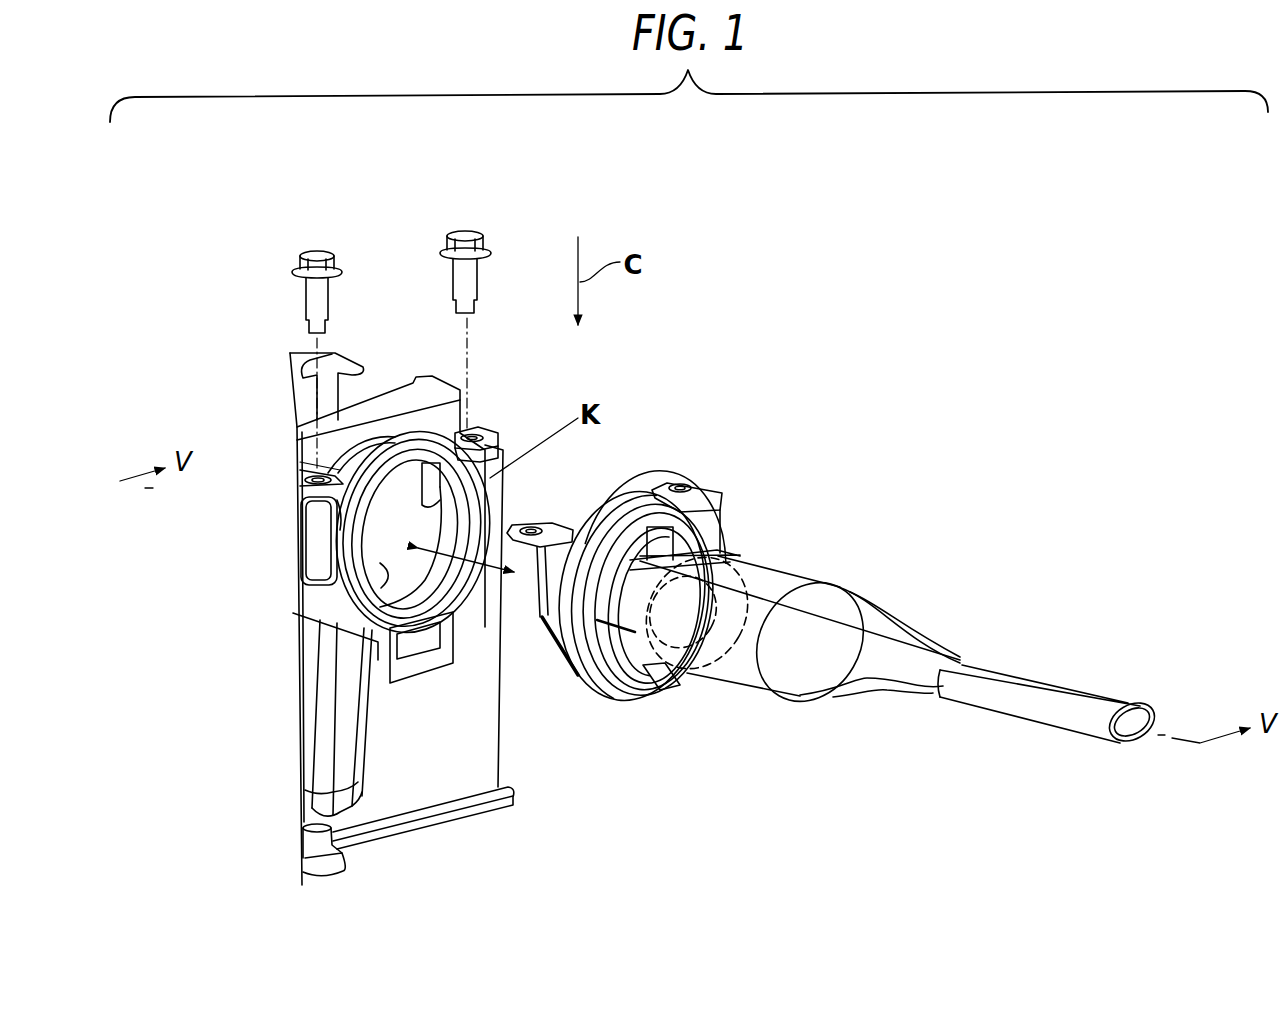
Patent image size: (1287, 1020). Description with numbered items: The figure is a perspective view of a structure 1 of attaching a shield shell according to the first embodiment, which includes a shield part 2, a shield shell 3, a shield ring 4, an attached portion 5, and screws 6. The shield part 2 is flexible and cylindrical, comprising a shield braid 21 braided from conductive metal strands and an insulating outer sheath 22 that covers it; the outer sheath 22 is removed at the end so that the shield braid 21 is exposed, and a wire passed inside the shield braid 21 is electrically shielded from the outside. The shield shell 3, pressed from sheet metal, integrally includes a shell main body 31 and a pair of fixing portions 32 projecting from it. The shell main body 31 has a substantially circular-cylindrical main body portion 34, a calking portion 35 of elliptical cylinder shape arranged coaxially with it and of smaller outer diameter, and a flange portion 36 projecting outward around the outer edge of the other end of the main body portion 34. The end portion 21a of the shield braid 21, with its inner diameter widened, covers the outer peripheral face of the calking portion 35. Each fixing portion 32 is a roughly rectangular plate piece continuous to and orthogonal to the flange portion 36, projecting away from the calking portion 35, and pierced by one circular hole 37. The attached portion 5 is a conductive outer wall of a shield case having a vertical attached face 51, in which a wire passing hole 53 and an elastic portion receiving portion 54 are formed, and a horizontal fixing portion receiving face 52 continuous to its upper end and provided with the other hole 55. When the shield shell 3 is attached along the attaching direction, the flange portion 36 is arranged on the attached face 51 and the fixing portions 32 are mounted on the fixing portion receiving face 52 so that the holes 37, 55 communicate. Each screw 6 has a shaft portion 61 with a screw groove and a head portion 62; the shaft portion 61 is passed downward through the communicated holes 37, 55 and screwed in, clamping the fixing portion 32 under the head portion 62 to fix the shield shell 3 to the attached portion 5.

The structure of attaching a shield shell 1 is at (751, 287).
The shield part 2 is at (893, 622).
The shield shell 3 is at (733, 582).
The shield ring 4 is at (755, 608).
The attached portion 5 is at (378, 578).
The screw 6 is at (420, 307).
The shield braid 21 is at (910, 640).
The end portion 21a is at (763, 567).
The outer sheath 22 is at (1007, 667).
The shell main body 31 is at (680, 705).
The fixing portion 32 is at (647, 504).
The main body portion 34 is at (582, 658).
The calking portion 35 is at (633, 650).
The flange portion 36 is at (713, 513).
The one hole 37 is at (537, 524).
The attached face 51 is at (340, 553).
The fixing portion receiving face 52 is at (300, 465).
The wire passing hole 53 is at (372, 593).
The elastic portion receiving portion 54 is at (400, 642).
The other hole 55 is at (312, 477).
The shaft portion 61 is at (334, 258).
The head portion 62 is at (327, 300).